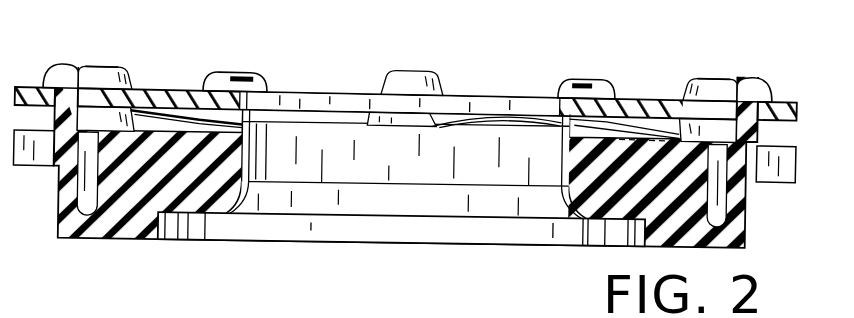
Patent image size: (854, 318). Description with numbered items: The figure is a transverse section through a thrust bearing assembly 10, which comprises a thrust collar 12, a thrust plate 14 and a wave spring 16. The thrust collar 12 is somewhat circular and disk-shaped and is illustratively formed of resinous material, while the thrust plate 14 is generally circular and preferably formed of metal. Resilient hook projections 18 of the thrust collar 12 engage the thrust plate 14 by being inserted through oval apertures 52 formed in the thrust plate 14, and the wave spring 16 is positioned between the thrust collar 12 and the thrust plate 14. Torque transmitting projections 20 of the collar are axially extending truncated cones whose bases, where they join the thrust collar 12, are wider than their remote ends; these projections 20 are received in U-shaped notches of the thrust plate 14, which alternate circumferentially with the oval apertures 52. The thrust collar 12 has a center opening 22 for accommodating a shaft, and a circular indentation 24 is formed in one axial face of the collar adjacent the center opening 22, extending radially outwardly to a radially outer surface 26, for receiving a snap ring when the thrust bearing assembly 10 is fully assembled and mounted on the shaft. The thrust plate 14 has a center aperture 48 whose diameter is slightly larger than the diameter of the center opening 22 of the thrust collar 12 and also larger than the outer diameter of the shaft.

The thrust bearing assembly 10 is at (479, 62).
The thrust collar 12 is at (729, 251).
The thrust plate 14 is at (638, 98).
The wave spring 16 is at (192, 100).
The resilient hook projections 18 is at (55, 62).
The torque transmitting projections 20 is at (120, 63).
The center opening 22 is at (381, 247).
The circular indentation 24 is at (590, 232).
The radially outer surface 26 is at (634, 240).
The center aperture 48 is at (545, 108).
The oval apertures 52 is at (95, 66).